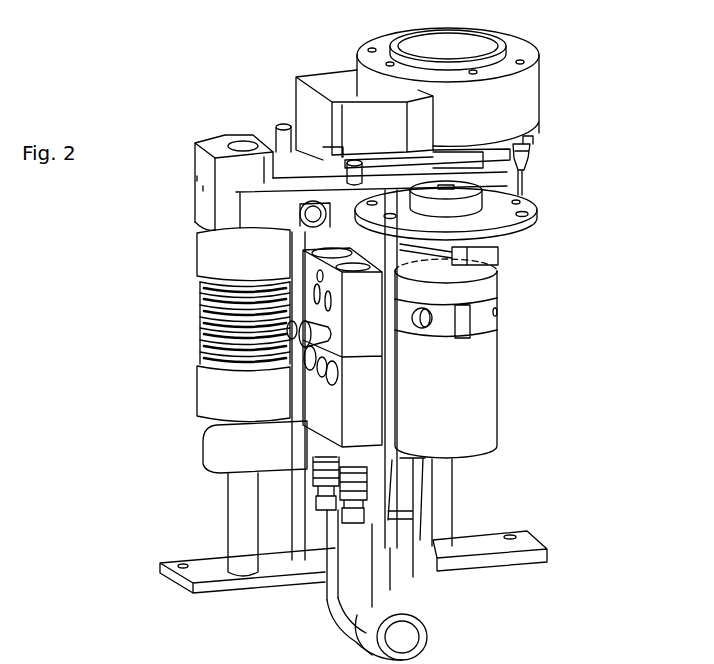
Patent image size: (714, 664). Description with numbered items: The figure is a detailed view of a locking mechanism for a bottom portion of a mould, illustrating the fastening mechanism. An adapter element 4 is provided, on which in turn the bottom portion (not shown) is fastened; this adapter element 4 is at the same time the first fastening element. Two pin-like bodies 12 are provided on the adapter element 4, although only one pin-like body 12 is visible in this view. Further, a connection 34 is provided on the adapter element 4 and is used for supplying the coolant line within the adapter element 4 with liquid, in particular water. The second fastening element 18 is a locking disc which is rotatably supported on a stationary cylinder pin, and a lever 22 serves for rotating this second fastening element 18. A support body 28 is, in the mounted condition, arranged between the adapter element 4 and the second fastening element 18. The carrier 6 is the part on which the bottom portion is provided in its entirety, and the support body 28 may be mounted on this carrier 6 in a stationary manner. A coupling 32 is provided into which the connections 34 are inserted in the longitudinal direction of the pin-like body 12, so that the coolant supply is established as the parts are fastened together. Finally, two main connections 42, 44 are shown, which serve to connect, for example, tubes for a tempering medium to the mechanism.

The adapter element 4 is at (518, 88).
The carrier 6 is at (519, 345).
The pin-like body 12 is at (530, 145).
The second fastening element 18 is at (513, 232).
The lever 22 is at (477, 262).
The support body 28 is at (540, 217).
The coupling 32 is at (423, 317).
The connection 34 is at (355, 175).
The main connection 42 is at (363, 522).
The main connection 44 is at (350, 518).